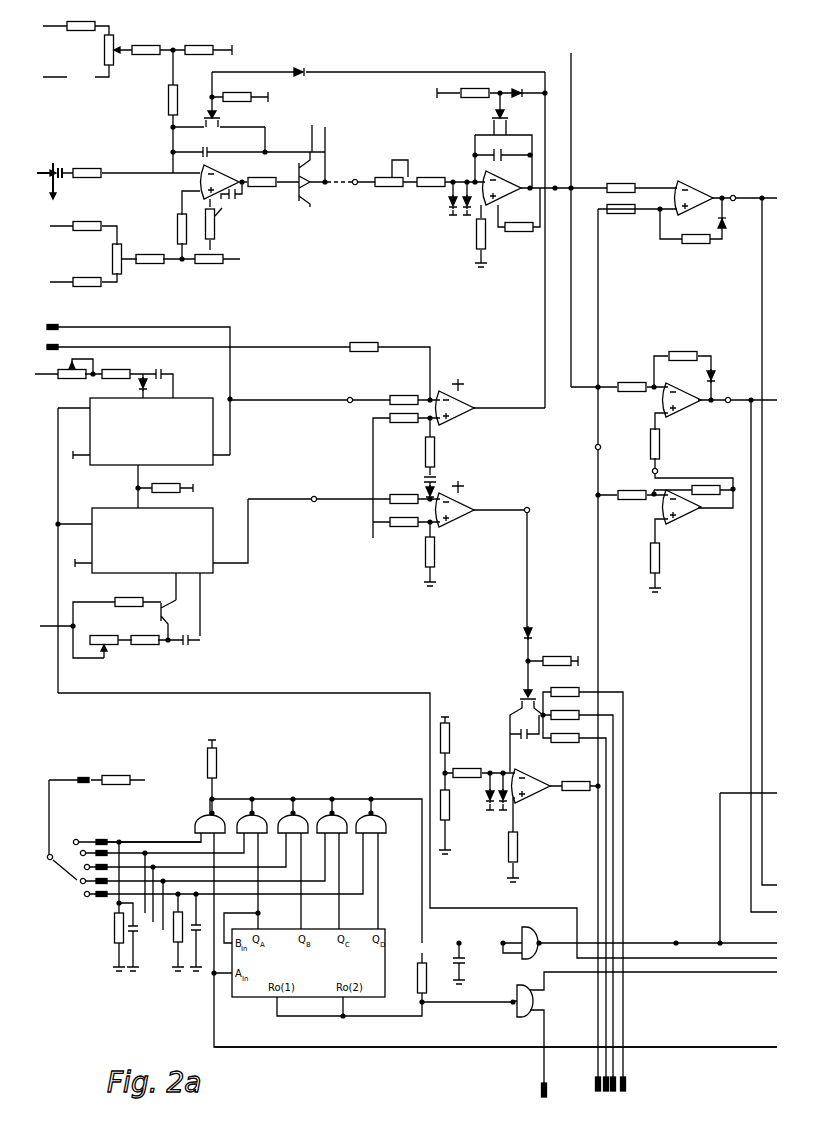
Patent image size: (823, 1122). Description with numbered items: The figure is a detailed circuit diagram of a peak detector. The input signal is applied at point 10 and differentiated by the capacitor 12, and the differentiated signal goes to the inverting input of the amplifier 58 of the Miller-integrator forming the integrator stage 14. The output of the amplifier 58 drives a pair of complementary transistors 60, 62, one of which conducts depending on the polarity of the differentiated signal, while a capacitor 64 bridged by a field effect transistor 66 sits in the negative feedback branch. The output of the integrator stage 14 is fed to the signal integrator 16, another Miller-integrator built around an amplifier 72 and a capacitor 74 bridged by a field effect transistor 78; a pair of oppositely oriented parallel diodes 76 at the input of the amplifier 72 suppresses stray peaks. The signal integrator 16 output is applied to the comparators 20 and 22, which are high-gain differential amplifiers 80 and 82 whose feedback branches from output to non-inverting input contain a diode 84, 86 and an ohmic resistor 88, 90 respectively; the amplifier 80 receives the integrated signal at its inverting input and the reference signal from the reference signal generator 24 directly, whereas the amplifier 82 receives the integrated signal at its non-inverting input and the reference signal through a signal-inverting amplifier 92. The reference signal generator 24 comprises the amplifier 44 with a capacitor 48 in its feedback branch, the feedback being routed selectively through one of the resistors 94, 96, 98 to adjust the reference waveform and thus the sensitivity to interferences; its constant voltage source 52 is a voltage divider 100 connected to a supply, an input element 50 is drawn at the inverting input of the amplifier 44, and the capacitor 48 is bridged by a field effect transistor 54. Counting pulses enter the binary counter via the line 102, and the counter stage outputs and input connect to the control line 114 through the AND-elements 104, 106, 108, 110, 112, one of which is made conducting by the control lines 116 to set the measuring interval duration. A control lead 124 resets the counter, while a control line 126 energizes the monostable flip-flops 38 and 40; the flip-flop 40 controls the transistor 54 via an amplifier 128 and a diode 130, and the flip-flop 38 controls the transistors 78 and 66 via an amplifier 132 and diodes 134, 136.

The input point 10 is at (47, 178).
The capacitor 12 is at (63, 170).
The integrator stage 14 is at (253, 229).
The signal integrator 16 is at (529, 191).
The comparator 20 is at (671, 153).
The comparator 22 is at (715, 340).
The reference signal generator 24 is at (487, 710).
The monostable flip-flop 38 is at (188, 407).
The monostable flip-flop 40 is at (205, 511).
The amplifier 44 is at (538, 782).
The capacitor 48 is at (524, 739).
The resistor 50 is at (468, 778).
The constant voltage source 52 is at (463, 758).
The field effect transistor 54 is at (521, 700).
The amplifier 58 is at (225, 178).
The complementary transistor 60 is at (311, 162).
The complementary transistor 62 is at (308, 203).
The capacitor 64 is at (208, 153).
The field effect transistor 66 is at (211, 112).
The amplifier 72 is at (503, 185).
The capacitor 74 is at (475, 152).
The pair of diodes 76 is at (462, 213).
The field effect transistor 78 is at (498, 122).
The high-gain differential amplifier 80 is at (695, 193).
The high-gain differential amplifier 82 is at (686, 404).
The diode 84 is at (726, 222).
The diode 86 is at (714, 376).
The ohmic resistor 88 is at (688, 243).
The ohmic resistor 90 is at (681, 351).
The signal-inverting amplifier 92 is at (686, 516).
The resistor 94 is at (581, 692).
The resistor 96 is at (581, 715).
The resistor 98 is at (581, 738).
The voltage divider 100 is at (432, 807).
The line 102 is at (645, 1049).
The AND-element 104 is at (199, 828).
The AND-element 106 is at (253, 810).
The AND-element 108 is at (294, 810).
The AND-element 110 is at (333, 810).
The AND-element 112 is at (372, 810).
The control line 114 is at (632, 943).
The control lines 116 is at (163, 842).
The control lead 124 is at (712, 975).
The control line 126 is at (342, 684).
The amplifier 128 is at (468, 504).
The diode 130 is at (531, 634).
The amplifier 132 is at (468, 402).
The diode 134 is at (518, 89).
The diode 136 is at (300, 70).